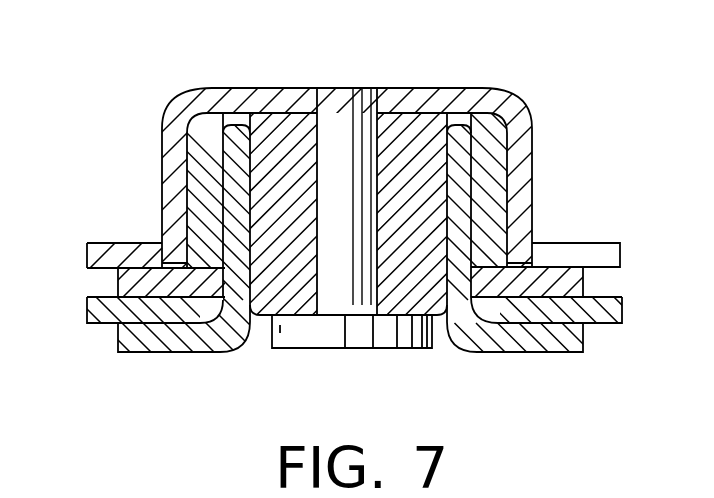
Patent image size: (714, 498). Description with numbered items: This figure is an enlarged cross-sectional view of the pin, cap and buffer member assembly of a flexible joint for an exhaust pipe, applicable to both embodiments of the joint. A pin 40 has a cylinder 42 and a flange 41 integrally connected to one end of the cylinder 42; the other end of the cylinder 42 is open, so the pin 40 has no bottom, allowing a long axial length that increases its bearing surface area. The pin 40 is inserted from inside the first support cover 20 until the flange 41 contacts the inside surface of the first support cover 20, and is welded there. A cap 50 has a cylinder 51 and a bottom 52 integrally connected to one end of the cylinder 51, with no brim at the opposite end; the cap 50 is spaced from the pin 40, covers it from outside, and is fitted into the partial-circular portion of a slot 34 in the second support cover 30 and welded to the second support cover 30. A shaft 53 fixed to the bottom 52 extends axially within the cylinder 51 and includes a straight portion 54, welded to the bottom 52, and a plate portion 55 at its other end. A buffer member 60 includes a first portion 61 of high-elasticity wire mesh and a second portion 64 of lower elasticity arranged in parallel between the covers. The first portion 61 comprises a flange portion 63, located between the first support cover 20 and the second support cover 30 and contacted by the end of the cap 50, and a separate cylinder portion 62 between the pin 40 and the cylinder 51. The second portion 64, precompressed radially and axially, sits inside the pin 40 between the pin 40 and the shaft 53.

The first support cover 20 is at (612, 327).
The second support cover 30 is at (92, 244).
The slot 34 is at (597, 250).
The pin 40 is at (460, 186).
The flange 41 is at (537, 333).
The cylinder 42 is at (458, 165).
The cap 50 is at (225, 85).
The cylinder 51 is at (170, 178).
The bottom 52 is at (270, 95).
The shaft 53 is at (345, 100).
The straight portion 54 is at (330, 200).
The plate portion 55 is at (367, 340).
The buffer member 60 is at (190, 215).
The first portion 61 is at (493, 148).
The cylinder portion 62 is at (197, 148).
The flange portion 63 is at (138, 282).
The second portion 64 is at (283, 260).